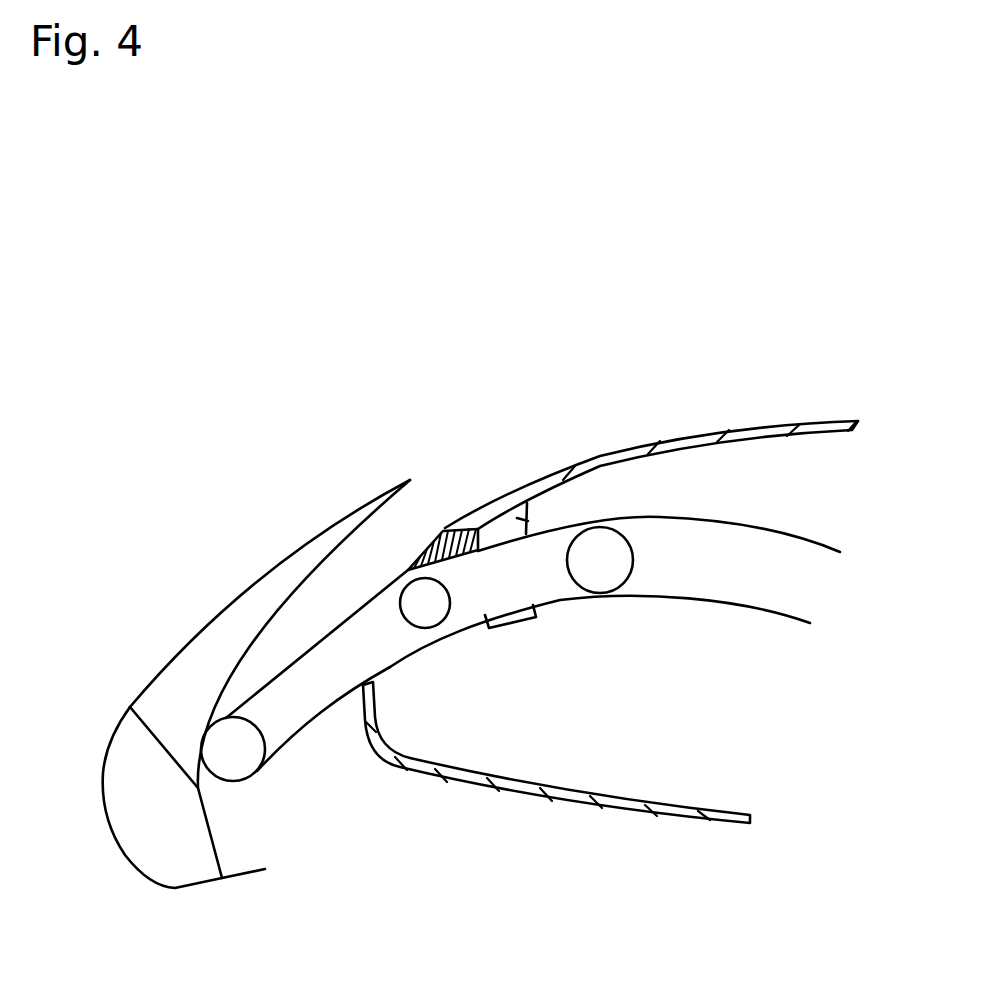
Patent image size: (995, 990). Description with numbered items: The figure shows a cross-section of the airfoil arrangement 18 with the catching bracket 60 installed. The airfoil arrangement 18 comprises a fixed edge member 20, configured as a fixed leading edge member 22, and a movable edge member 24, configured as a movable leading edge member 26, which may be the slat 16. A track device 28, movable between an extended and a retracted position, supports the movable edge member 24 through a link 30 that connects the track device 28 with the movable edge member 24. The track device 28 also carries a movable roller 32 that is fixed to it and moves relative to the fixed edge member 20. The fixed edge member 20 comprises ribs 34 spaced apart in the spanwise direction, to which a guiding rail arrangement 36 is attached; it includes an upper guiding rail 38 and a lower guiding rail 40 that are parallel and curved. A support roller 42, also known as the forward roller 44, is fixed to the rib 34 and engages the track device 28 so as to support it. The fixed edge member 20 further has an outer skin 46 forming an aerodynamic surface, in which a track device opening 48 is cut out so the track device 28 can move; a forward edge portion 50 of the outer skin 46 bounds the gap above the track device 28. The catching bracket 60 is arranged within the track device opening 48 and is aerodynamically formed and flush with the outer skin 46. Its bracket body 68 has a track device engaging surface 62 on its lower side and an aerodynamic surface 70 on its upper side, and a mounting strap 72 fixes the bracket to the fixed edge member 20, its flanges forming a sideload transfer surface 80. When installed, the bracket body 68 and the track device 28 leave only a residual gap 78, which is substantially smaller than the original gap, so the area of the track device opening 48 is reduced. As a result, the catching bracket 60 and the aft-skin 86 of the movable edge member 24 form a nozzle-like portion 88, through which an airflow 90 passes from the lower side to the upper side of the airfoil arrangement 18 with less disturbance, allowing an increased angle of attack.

The slat 16 is at (124, 743).
The airfoil arrangement 18 is at (146, 289).
The fixed edge member 20 is at (632, 380).
The fixed leading edge member 22 is at (666, 407).
The movable edge member 24 is at (65, 625).
The movable leading edge member 26 is at (178, 636).
The track device 28 is at (323, 728).
The link 30 is at (237, 762).
The movable roller 32 is at (628, 560).
The ribs 34 is at (737, 459).
The guiding rail arrangement 36 is at (776, 512).
The upper guiding rail 38 is at (808, 537).
The lower guiding rail 40 is at (810, 623).
The support roller 42 is at (425, 618).
The forward roller 44 is at (413, 583).
The outer skin 46 is at (583, 462).
The track device opening 48 is at (351, 560).
The forward edge portion 50 is at (447, 527).
The catching bracket 60 is at (434, 521).
The track device engaging surface 62 is at (447, 533).
The bracket body 68 is at (470, 550).
The aerodynamic surface 70 is at (416, 570).
The mounting strap 72 is at (520, 518).
The residual gap 78 is at (390, 578).
The sideload transfer surface 80 is at (533, 612).
The aft-skin 86 is at (264, 620).
The nozzle-like portion 88 is at (413, 508).
The airflow 90 is at (328, 594).